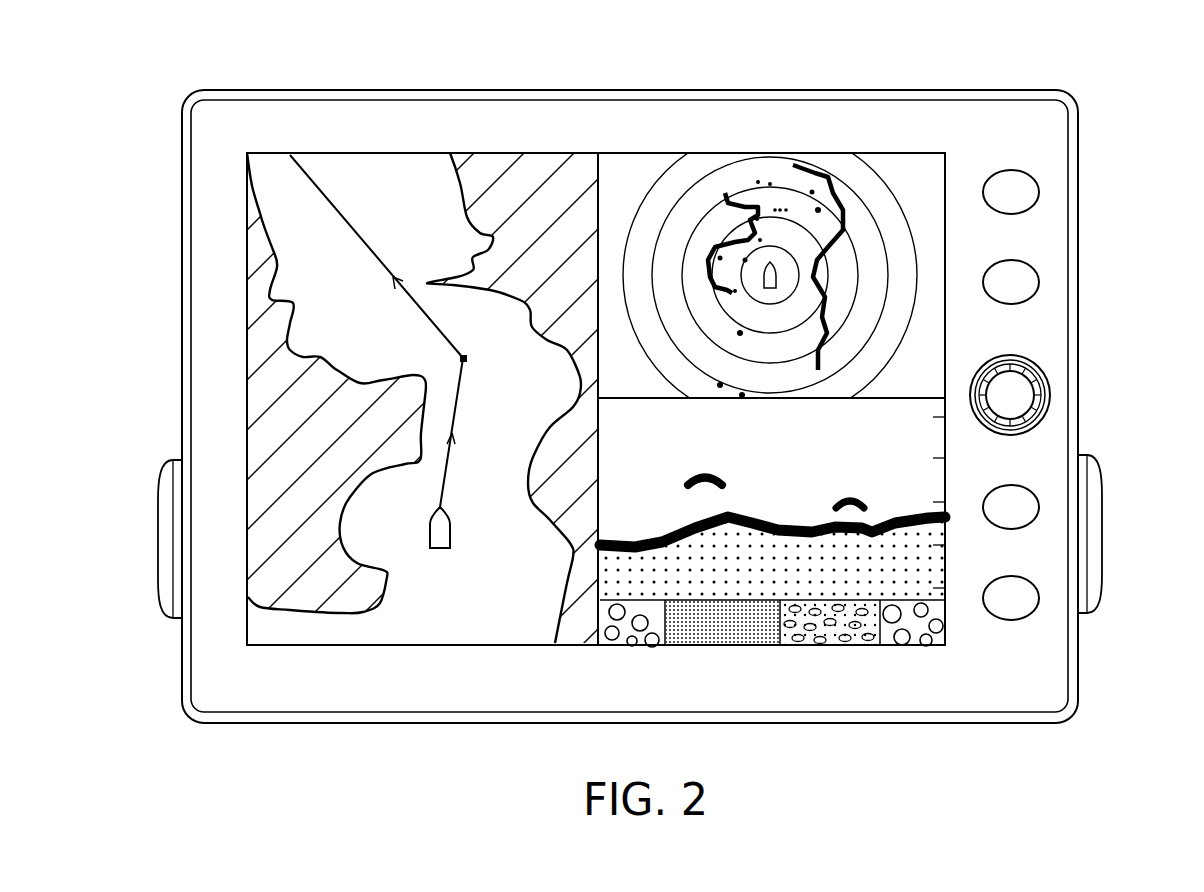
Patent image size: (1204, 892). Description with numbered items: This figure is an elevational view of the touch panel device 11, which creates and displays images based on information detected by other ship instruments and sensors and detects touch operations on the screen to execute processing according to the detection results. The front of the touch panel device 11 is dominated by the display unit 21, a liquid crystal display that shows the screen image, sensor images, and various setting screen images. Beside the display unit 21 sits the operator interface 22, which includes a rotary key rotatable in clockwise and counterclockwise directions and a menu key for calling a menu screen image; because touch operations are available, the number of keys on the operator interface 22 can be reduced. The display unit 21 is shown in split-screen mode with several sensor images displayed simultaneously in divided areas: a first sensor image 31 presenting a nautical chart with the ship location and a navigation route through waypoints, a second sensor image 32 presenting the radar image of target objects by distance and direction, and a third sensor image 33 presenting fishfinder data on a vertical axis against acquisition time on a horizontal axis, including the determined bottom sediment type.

The touch panel device 11 is at (1150, 120).
The display unit 21 is at (958, 155).
The operator interface 22 is at (1053, 363).
The first sensor image 31 is at (248, 187).
The second sensor image 32 is at (945, 252).
The third sensor image 33 is at (945, 577).